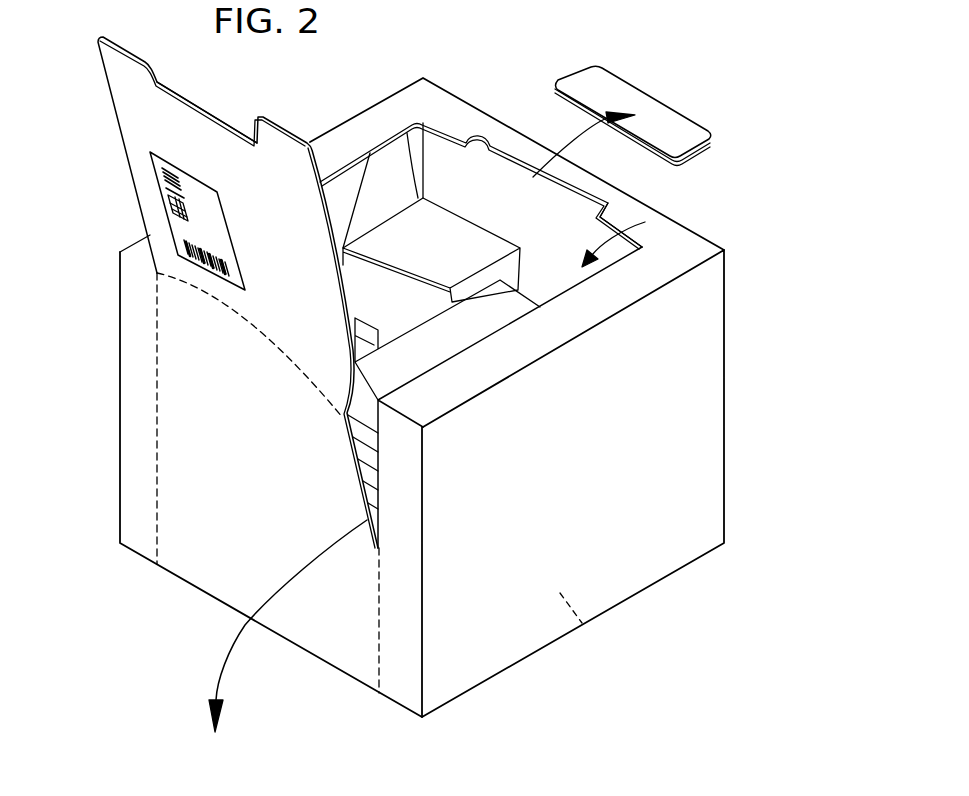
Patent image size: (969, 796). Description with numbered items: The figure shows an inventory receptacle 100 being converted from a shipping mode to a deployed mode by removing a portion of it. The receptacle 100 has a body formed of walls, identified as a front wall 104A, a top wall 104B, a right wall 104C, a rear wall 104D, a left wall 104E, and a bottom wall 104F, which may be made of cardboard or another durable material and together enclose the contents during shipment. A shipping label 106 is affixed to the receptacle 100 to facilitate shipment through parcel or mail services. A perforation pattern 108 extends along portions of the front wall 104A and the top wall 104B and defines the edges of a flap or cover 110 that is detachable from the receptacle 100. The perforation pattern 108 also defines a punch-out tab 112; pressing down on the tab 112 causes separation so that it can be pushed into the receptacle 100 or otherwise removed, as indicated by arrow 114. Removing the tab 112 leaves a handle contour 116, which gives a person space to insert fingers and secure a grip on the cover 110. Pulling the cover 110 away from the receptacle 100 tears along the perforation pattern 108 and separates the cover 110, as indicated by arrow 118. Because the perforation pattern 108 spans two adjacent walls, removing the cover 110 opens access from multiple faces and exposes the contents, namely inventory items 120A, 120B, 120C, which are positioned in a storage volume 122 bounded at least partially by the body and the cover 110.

The inventory receptacle 100 is at (748, 166).
The front wall 104A is at (140, 300).
The top wall 104B is at (420, 87).
The right wall 104C is at (530, 635).
The rear wall 104D is at (490, 173).
The left wall 104E is at (340, 190).
The bottom wall 104F is at (583, 623).
The shipping label 106 is at (227, 217).
The perforation pattern 108 is at (377, 642).
The cover 110 is at (118, 97).
The punch-out tab 112 is at (673, 130).
The arrow 114 is at (533, 177).
The handle contour 116 is at (182, 97).
The arrow 118 is at (223, 667).
The inventory item 120A is at (412, 205).
The inventory item 120B is at (458, 253).
The inventory item 120C is at (470, 348).
The storage volume 122 is at (645, 222).